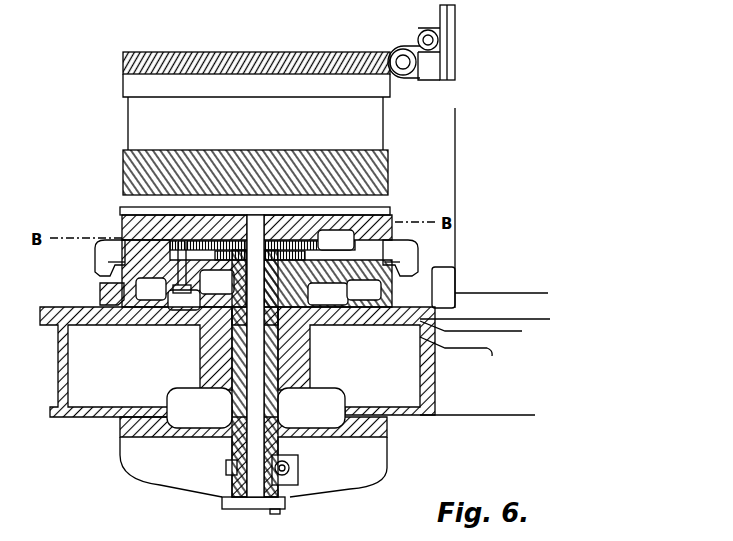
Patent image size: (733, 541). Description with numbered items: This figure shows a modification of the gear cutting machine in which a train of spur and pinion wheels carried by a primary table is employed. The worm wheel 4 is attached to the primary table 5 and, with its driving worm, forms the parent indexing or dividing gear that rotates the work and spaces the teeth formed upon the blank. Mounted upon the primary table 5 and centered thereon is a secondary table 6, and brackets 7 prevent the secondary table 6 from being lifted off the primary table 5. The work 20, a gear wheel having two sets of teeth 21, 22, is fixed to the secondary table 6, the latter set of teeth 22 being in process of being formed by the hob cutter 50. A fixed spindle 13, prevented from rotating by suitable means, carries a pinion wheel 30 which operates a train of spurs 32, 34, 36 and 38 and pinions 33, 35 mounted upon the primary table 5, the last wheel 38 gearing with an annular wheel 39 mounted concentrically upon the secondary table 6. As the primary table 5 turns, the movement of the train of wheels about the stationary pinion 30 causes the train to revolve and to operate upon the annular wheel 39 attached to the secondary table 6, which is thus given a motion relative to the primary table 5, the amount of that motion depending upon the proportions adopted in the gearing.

The worm wheel 4 is at (100, 293).
The primary table 5 is at (128, 302).
The secondary table 6 is at (126, 212).
The brackets 7 is at (98, 256).
The spindle 13 is at (255, 405).
The work 20 is at (143, 128).
The teeth 21 is at (138, 181).
The teeth 22 is at (138, 91).
The pinion wheel 30 is at (260, 212).
The spur 32 is at (310, 245).
The pinion 33 is at (328, 283).
The spur 34 is at (203, 268).
The pinion 35 is at (262, 240).
The spur 36 is at (204, 241).
The spur 38 is at (184, 273).
The annular wheel 39 is at (100, 226).
The hob cutter 50 is at (403, 48).